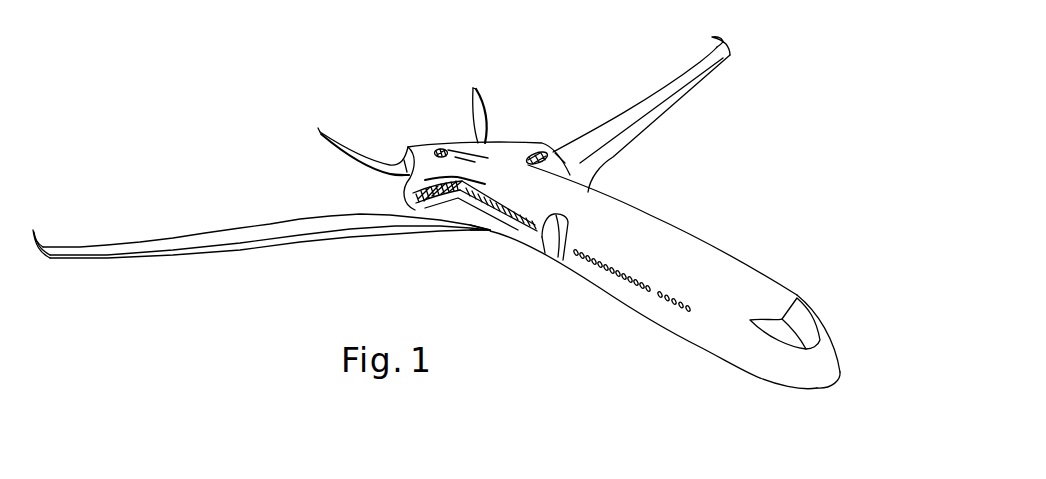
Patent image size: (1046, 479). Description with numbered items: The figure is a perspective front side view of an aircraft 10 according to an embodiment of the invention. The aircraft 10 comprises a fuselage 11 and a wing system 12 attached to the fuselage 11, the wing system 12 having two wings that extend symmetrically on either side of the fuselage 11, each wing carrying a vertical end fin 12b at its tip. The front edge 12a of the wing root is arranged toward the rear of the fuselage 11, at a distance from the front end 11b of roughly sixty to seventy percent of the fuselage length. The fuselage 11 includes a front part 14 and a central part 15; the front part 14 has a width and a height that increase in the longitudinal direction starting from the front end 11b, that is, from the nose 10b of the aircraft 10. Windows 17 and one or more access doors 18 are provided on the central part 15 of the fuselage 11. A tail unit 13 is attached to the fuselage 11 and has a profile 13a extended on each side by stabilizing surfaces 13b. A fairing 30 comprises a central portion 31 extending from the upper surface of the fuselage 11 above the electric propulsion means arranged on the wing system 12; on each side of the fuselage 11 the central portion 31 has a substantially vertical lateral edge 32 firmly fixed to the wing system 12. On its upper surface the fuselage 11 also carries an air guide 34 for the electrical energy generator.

The aircraft 10 is at (687, 183).
The nose 10b is at (841, 393).
The fuselage 11 is at (742, 265).
The front end 11b is at (838, 368).
The wing system 12 is at (258, 235).
The front edge of the wing root 12a is at (492, 243).
The vertical end fin 12b is at (43, 253).
The tail unit 13 is at (368, 151).
The profile 13a is at (397, 162).
The stabilizing surfaces 13b is at (320, 133).
The front part 14 is at (781, 396).
The central part 15 is at (594, 325).
The windows 17 is at (657, 295).
The access doors 18 is at (560, 250).
The fairing 30 is at (525, 194).
The central portion 31 is at (508, 153).
The lateral edge 32 is at (405, 198).
The air guide 34 is at (467, 160).